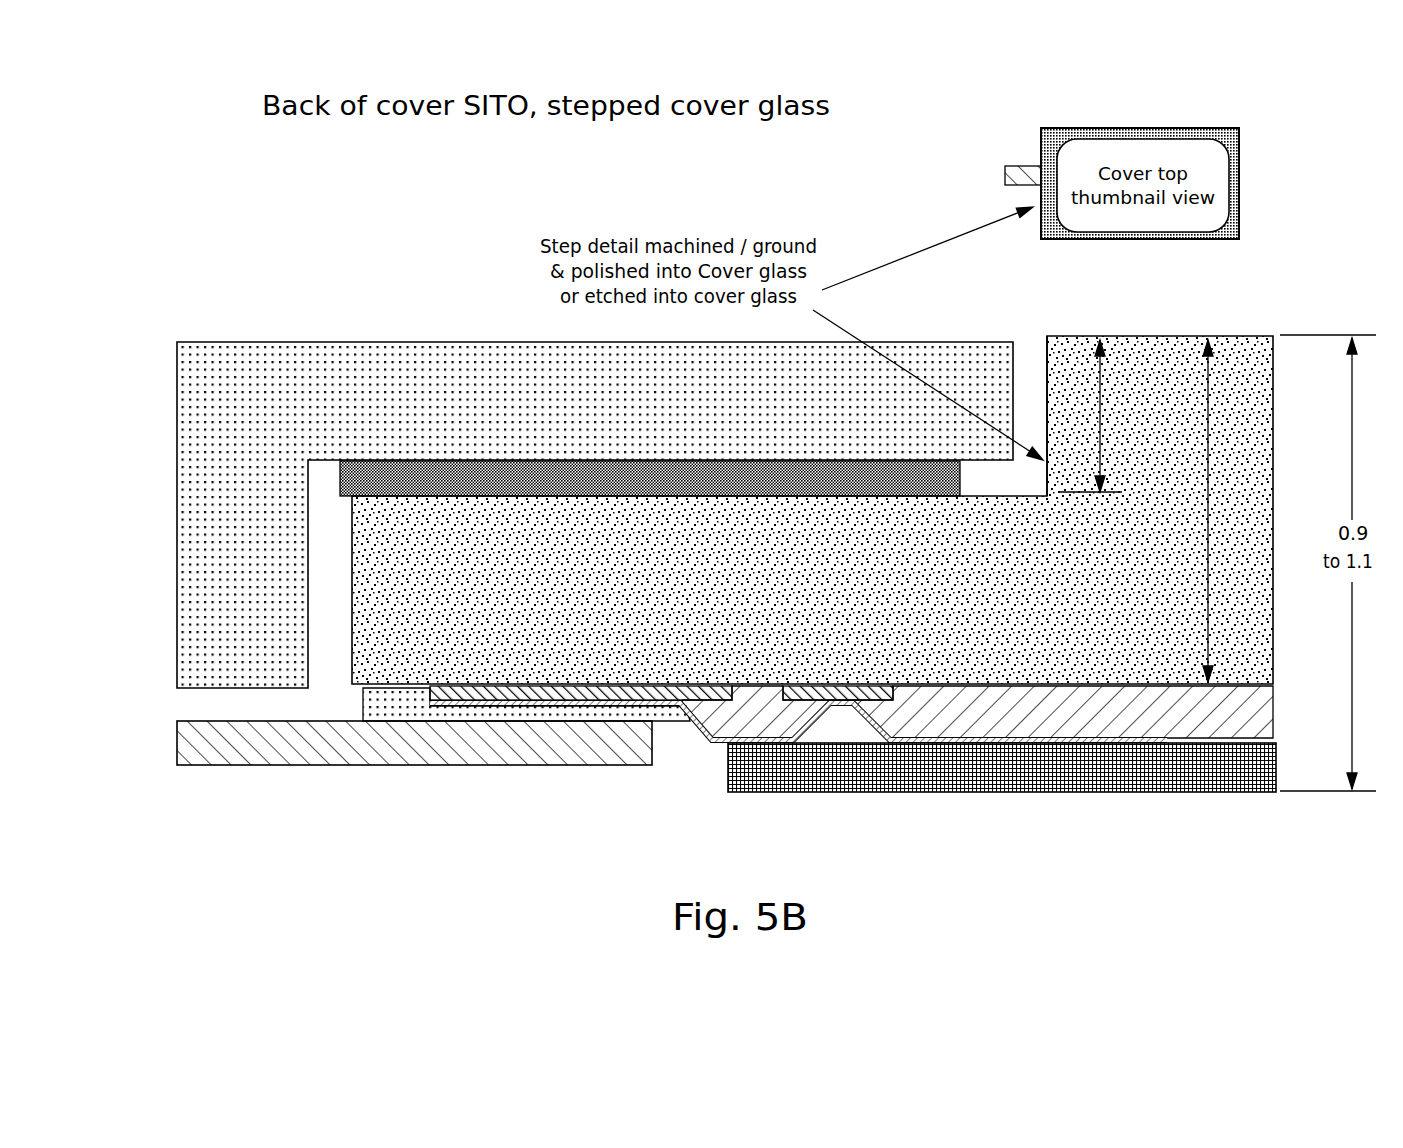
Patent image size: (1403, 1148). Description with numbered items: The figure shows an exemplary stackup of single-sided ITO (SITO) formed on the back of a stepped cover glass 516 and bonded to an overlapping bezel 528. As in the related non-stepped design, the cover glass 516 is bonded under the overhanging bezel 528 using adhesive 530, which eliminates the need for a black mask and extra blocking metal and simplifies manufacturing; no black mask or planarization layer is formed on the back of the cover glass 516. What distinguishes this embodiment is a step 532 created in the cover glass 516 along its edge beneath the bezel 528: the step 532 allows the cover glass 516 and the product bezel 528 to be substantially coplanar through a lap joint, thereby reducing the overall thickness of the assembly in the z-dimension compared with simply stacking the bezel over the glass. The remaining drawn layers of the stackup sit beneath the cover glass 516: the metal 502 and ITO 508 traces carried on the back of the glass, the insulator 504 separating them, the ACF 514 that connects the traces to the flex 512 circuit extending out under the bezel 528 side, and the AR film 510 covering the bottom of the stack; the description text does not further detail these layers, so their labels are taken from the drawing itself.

The bezel 528 is at (500, 342).
The adhesive 530 is at (961, 480).
The step 532 is at (1047, 366).
The cover glass 516 is at (1274, 497).
The insulator 504 is at (1278, 712).
The ACF 514 is at (363, 703).
The flex 512 is at (545, 768).
The ITO 508 is at (715, 743).
The metal 502 is at (882, 701).
The AR film 510 is at (1090, 793).